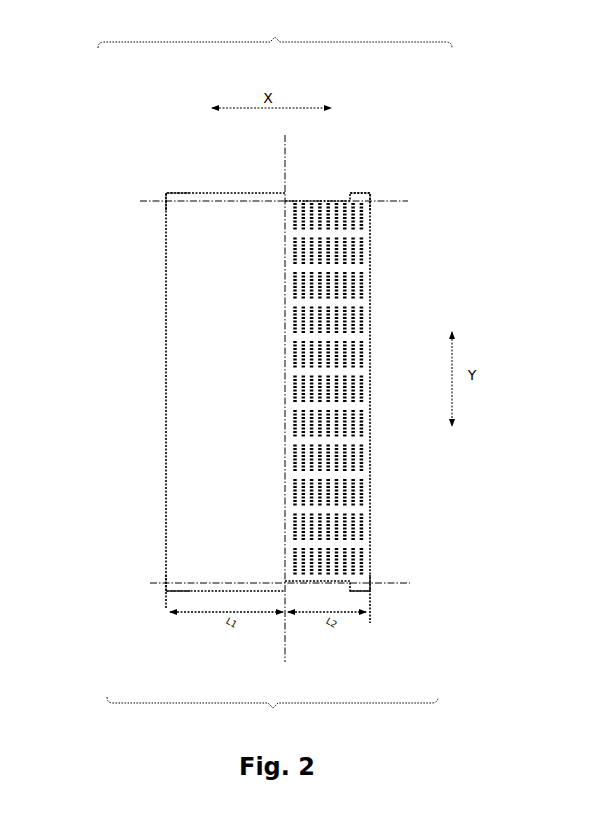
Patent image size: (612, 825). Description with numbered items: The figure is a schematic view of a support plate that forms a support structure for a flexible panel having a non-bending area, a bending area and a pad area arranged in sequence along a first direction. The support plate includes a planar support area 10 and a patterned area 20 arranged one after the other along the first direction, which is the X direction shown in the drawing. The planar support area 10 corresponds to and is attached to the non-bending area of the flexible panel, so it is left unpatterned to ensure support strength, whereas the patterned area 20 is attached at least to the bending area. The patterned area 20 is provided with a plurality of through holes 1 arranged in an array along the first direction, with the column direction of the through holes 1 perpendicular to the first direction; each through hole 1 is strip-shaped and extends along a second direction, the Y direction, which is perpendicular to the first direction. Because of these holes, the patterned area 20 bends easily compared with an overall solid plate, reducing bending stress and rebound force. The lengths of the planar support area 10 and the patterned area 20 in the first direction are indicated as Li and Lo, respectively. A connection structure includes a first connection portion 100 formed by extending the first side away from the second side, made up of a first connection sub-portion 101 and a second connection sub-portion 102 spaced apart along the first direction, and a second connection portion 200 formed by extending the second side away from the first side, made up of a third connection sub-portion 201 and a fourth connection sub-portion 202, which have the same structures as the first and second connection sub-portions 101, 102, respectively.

The first connection portion 100 is at (275, 29).
The first connection sub-portion 101 is at (186, 190).
The second connection sub-portion 102 is at (367, 190).
The through hole 1 is at (366, 238).
The patterned area 20 is at (348, 360).
The planar support area 10 is at (176, 411).
The third connection sub-portion 201 is at (178, 594).
The fourth connection sub-portion 202 is at (368, 594).
The second connection portion 200 is at (272, 719).